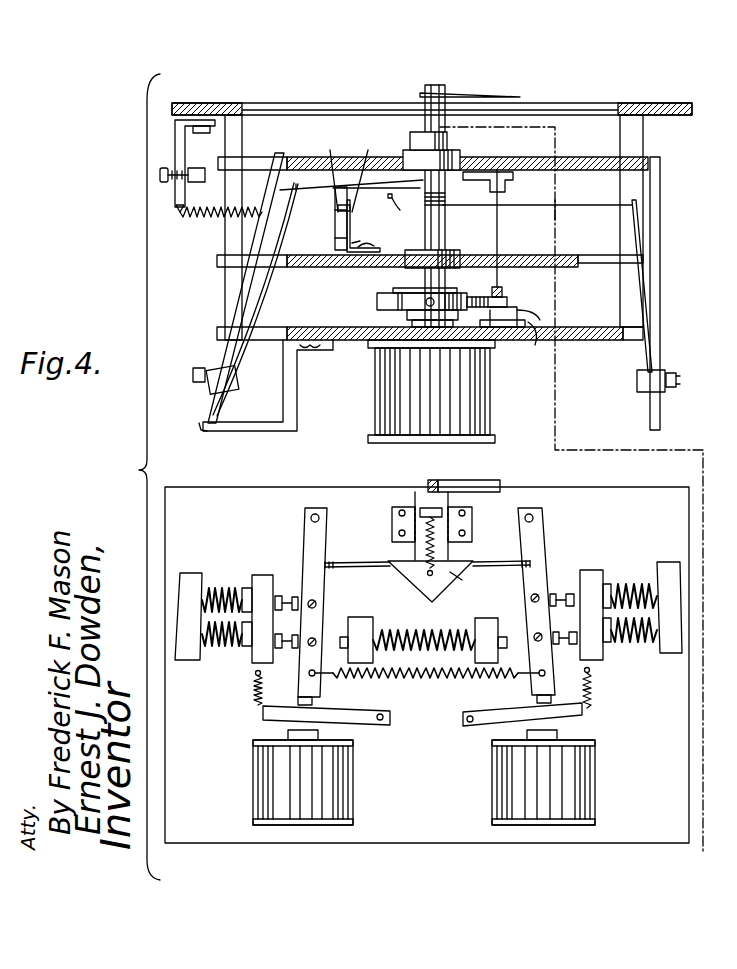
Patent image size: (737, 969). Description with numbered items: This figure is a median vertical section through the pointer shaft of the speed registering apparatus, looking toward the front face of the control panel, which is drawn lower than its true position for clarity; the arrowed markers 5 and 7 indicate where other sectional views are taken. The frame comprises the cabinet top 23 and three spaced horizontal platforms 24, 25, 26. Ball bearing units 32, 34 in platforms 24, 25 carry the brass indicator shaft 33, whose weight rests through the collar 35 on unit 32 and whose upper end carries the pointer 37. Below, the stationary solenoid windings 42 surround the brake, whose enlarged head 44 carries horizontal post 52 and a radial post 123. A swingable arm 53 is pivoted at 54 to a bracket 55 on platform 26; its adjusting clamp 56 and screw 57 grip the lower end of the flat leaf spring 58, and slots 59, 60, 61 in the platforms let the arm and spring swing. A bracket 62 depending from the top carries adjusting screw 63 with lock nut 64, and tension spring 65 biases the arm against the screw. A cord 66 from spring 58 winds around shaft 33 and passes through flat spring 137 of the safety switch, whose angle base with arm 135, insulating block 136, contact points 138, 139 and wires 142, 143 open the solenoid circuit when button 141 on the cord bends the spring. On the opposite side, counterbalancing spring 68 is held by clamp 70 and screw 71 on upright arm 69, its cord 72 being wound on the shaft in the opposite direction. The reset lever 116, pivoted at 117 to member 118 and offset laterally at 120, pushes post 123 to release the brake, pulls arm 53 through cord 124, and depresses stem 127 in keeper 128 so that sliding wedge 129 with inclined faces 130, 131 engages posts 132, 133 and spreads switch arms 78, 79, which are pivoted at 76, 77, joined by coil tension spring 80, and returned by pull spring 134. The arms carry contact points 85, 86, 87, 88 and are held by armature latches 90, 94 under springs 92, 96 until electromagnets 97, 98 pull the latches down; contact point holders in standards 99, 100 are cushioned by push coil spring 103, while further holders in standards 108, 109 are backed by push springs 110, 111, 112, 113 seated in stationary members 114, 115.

The section line 5 is at (402, 83).
The section line 7 is at (680, 802).
The top 23 is at (695, 109).
The platform 24 is at (646, 152).
The platform 25 is at (562, 268).
The bottom platform 26 is at (585, 341).
The ball bearing unit 32 is at (458, 161).
The indicator shaft 33 is at (445, 220).
The ball bearing unit 34 is at (449, 251).
The collar 35 is at (446, 141).
The pointer 37 is at (492, 100).
The solenoid windings 42 is at (375, 378).
The enlarged head 44 is at (378, 304).
The horizontal post 52 is at (434, 300).
The swingable arm 53 is at (245, 286).
The pivot 54 is at (200, 425).
The bracket 55 is at (298, 412).
The adjusting clamp 56 is at (208, 383).
The adjusting screw 57 is at (196, 368).
The leaf spring 58 is at (258, 236).
The slot 59 is at (250, 158).
The slot 60 is at (276, 272).
The slot 61 is at (268, 330).
The bracket 62 is at (178, 119).
The adjusting screw 63 is at (176, 203).
The lock nut 64 is at (193, 167).
The tension spring 65 is at (207, 215).
The cord 66 is at (360, 205).
The counterbalancing spring 68 is at (641, 210).
The upright arm 69 is at (661, 232).
The adjustable clamp 70 is at (660, 390).
The adjusting screw 71 is at (676, 372).
The cord 72 is at (569, 213).
The pivot 76 is at (308, 514).
The pivot 77 is at (540, 515).
The swingable arm 78 is at (305, 533).
The swingable arm 79 is at (545, 533).
The coil tension spring 80 is at (350, 683).
The contact point 85 is at (287, 595).
The contact point 86 is at (287, 649).
The contact point 87 is at (560, 595).
The contact point 88 is at (563, 646).
The armature latch 90 is at (360, 720).
The tension spring 92 is at (253, 692).
The armature latch 94 is at (492, 718).
The tension spring 96 is at (597, 690).
The electromagnet 97 is at (262, 772).
The electromagnet 98 is at (577, 768).
The standard 99 is at (360, 617).
The standard 100 is at (475, 625).
The push coil spring 103 is at (404, 620).
The standard 108 is at (590, 570).
The standard 109 is at (262, 575).
The coil push spring 110 is at (628, 585).
The coil push spring 111 is at (632, 645).
The coil push spring 112 is at (222, 582).
The coil push spring 113 is at (216, 645).
The stationary member 114 is at (666, 562).
The stationary member 115 is at (186, 568).
The offset lever arm 116 is at (508, 290).
The pivot 117 is at (533, 352).
The member 118 is at (508, 340).
The lateral offset 120 is at (470, 472).
The radial post 123 is at (528, 315).
The cord 124 is at (380, 177).
The stem 127 is at (418, 492).
The keeper 128 is at (395, 513).
The sliding wedge 129 is at (462, 582).
The inclined side face 130 is at (440, 608).
The inclined side face 131 is at (410, 585).
The post 132 is at (495, 566).
The post 133 is at (342, 555).
The pull spring 134 is at (382, 277).
The extending arm 135 is at (358, 228).
The insulating block 136 is at (338, 262).
The flat spring 137 is at (334, 216).
The contact point 138 is at (319, 173).
The contact point 139 is at (354, 173).
The button 141 is at (400, 208).
The wire 142 is at (333, 238).
The wire 143 is at (384, 241).